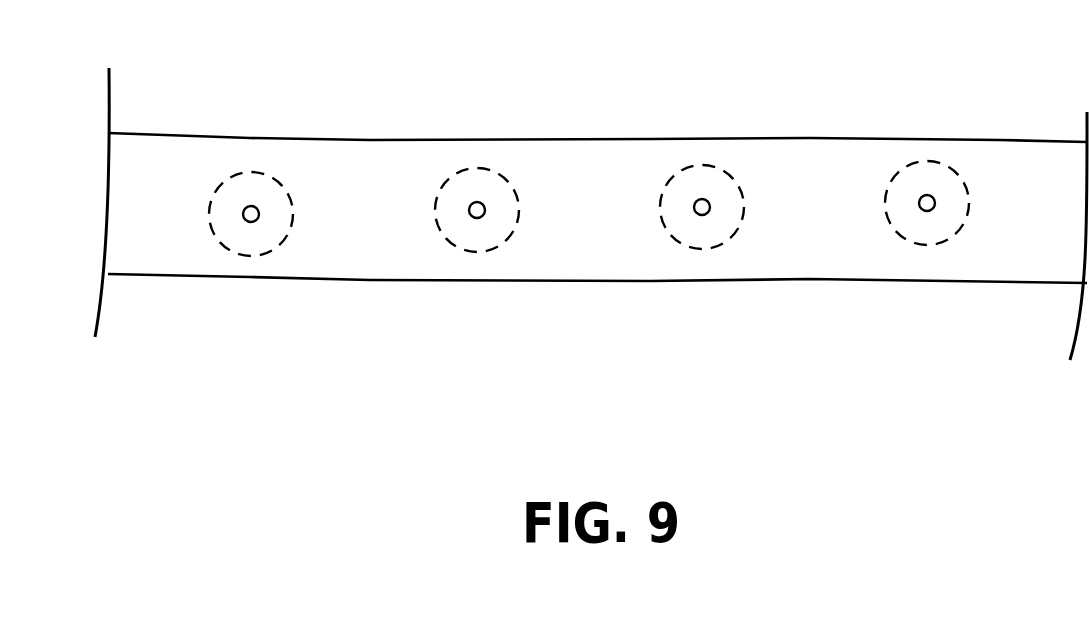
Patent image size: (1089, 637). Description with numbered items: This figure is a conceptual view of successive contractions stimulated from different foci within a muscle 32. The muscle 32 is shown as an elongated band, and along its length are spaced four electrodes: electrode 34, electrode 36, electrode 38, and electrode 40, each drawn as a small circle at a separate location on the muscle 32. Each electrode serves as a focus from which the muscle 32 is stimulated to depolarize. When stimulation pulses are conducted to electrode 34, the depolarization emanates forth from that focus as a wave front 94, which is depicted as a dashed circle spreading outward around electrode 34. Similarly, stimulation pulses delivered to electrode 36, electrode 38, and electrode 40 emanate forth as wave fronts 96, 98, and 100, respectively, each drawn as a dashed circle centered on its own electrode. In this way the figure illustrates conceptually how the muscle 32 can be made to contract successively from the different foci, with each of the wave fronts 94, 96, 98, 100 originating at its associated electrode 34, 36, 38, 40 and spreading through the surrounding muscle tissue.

The muscle 32 is at (591, 194).
The electrode 34 is at (198, 287).
The electrode 36 is at (423, 283).
The electrode 38 is at (650, 280).
The electrode 40 is at (876, 276).
The wave front 94 is at (279, 176).
The wave front 96 is at (504, 172).
The wave front 98 is at (731, 169).
The wave front 100 is at (963, 165).